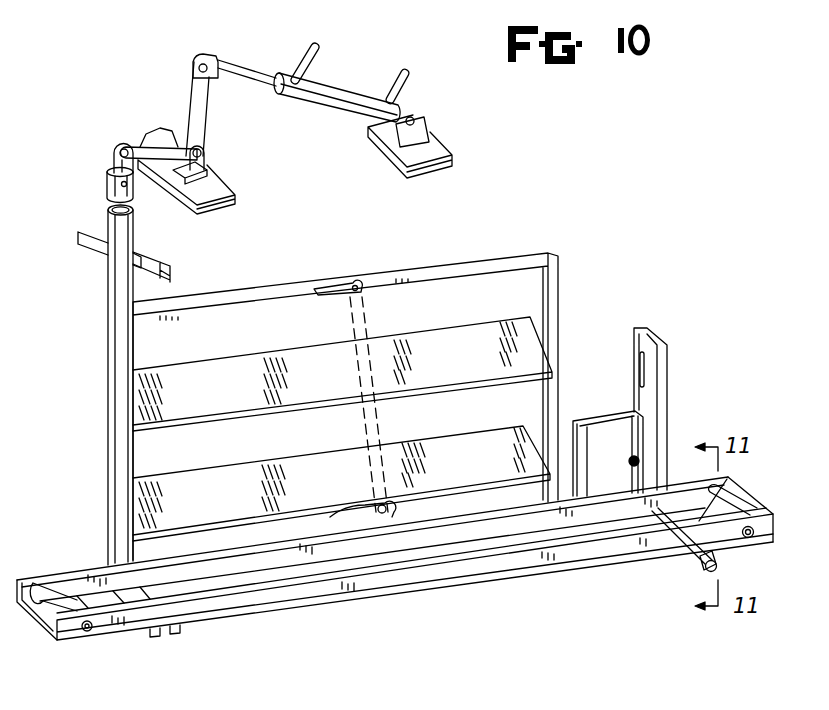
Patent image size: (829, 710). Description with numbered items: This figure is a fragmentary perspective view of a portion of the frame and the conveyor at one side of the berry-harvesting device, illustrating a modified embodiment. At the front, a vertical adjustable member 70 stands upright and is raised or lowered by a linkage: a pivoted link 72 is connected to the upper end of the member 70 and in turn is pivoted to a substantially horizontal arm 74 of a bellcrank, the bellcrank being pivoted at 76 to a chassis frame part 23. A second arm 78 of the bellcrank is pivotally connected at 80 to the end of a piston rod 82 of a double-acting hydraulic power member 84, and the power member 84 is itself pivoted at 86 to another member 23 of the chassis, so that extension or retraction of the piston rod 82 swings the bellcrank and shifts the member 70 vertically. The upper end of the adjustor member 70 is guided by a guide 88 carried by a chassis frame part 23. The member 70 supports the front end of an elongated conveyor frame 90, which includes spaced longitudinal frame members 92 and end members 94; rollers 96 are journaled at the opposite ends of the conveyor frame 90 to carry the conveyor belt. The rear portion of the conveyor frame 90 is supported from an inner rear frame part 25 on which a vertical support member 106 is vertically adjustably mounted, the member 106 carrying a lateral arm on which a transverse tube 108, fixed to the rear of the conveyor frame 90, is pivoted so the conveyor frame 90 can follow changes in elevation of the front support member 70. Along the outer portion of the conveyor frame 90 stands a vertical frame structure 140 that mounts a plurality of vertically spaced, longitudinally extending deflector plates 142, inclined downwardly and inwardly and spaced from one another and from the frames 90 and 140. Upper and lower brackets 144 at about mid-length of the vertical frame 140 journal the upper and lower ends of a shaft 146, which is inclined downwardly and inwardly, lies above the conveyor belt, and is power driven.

The chassis frame part 23 is at (425, 165).
The inner rear frame part 25 is at (602, 425).
The front vertical adjustable member 70 is at (118, 352).
The pivoted link 72 is at (114, 160).
The horizontal arm 74 is at (160, 146).
The bellcrank pivot 76 is at (204, 153).
The second arm 78 is at (205, 106).
The pivot connection 80 is at (213, 54).
The piston rod 82 is at (247, 67).
The double-acting hydraulic power member 84 is at (336, 90).
The power member pivot 86 is at (416, 119).
The guide 88 is at (140, 252).
The conveyor frame 90 is at (82, 573).
The longitudinal frame member 92 is at (213, 612).
The end member 94 is at (40, 610).
The roller 96 is at (72, 607).
The vertical support member 106 is at (663, 398).
The transverse tube 108 is at (708, 569).
The vertical frame structure 140 is at (478, 264).
The deflector plate 142 is at (203, 433).
The bracket 144 is at (339, 285).
The shaft 146 is at (368, 310).